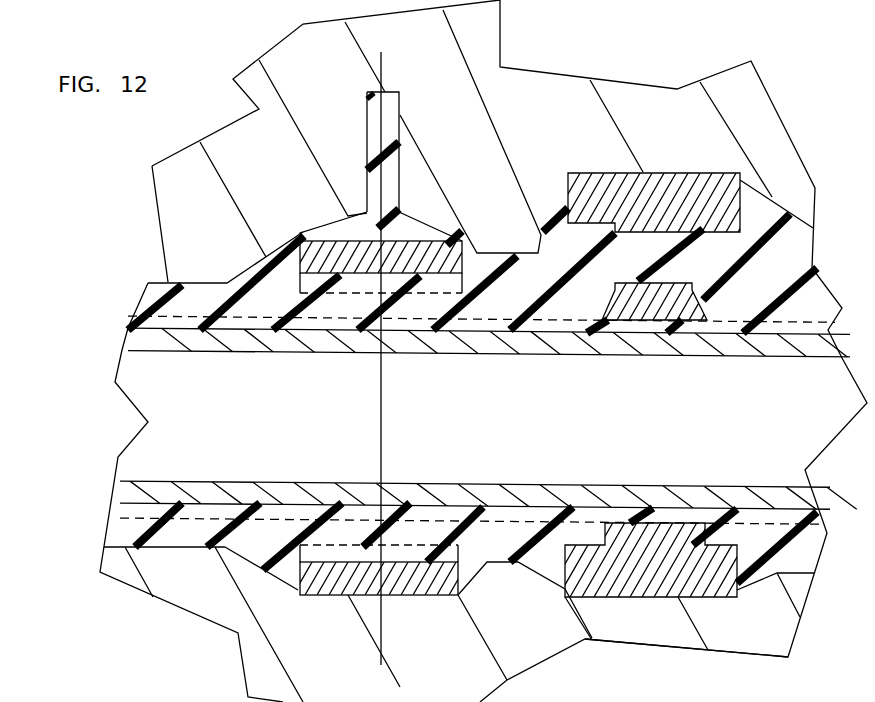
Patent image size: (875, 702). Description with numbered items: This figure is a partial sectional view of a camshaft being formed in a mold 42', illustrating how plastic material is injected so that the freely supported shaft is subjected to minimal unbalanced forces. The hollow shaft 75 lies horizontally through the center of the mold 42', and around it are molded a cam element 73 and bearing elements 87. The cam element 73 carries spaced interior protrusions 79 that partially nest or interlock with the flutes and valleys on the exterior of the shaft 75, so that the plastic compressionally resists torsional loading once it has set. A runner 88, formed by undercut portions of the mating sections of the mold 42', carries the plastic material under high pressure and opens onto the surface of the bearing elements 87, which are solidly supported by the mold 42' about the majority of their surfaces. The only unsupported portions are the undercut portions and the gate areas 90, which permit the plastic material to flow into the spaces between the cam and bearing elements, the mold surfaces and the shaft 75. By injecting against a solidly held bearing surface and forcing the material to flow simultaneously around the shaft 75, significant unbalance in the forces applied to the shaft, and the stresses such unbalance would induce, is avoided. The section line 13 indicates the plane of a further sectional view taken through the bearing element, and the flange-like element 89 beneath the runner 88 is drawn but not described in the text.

The section line 13- 13 is at (342, 665).
The mold 42' is at (517, 324).
The cam element 73 is at (692, 173).
The hollow shaft 75 is at (622, 357).
The protrusions 79 is at (660, 320).
The bearing elements 87 is at (432, 240).
The runner 88 is at (400, 107).
The flange 89 is at (309, 240).
The gate areas 90 is at (458, 243).